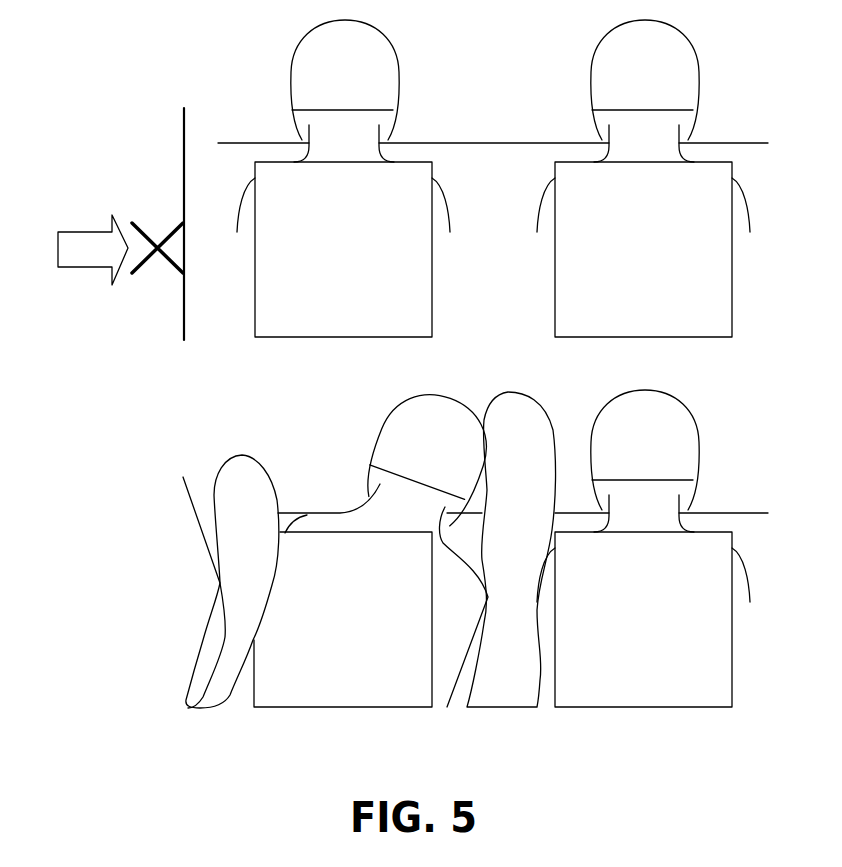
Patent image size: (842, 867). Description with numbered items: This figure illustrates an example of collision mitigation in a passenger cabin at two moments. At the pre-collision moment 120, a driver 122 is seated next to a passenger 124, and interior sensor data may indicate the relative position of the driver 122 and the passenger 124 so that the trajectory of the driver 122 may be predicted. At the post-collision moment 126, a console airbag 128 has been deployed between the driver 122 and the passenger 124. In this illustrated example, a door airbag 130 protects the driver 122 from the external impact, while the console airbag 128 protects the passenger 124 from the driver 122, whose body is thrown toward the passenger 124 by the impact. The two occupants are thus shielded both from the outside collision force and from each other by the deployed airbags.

The pre-collision moment 120 is at (99, 165).
The driver 122 is at (318, 22).
The passenger 124 is at (633, 20).
The post-collision moment 126 is at (122, 513).
The console airbag 128 is at (527, 393).
The door airbag 130 is at (252, 455).